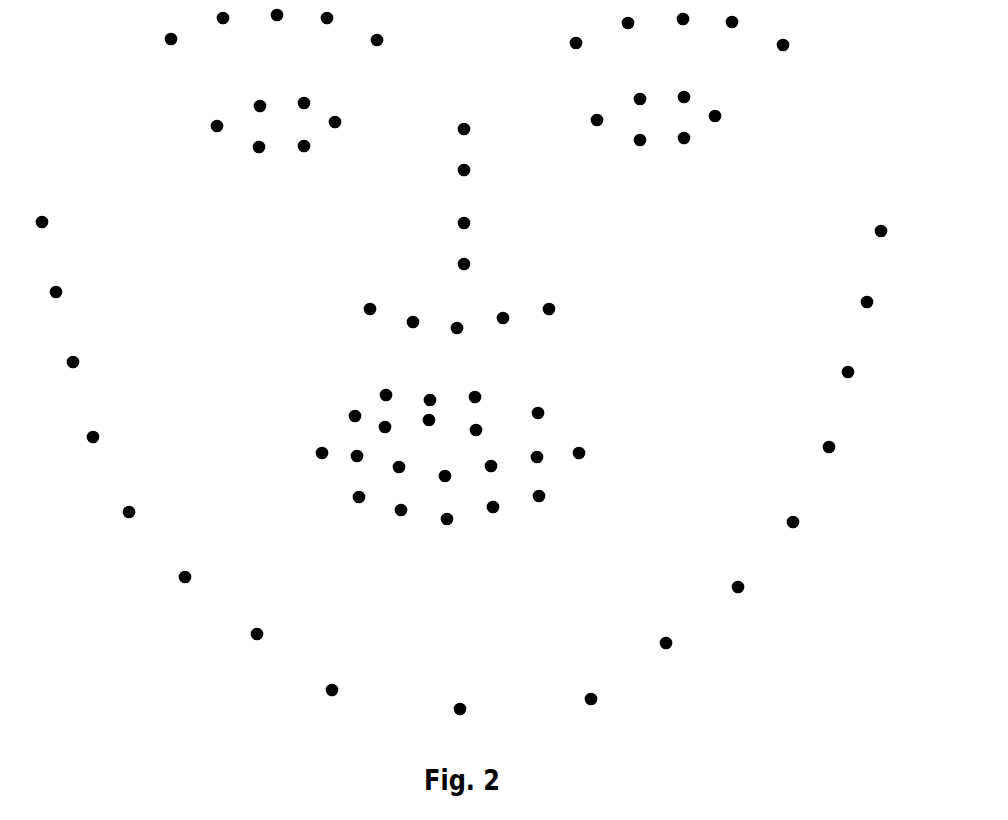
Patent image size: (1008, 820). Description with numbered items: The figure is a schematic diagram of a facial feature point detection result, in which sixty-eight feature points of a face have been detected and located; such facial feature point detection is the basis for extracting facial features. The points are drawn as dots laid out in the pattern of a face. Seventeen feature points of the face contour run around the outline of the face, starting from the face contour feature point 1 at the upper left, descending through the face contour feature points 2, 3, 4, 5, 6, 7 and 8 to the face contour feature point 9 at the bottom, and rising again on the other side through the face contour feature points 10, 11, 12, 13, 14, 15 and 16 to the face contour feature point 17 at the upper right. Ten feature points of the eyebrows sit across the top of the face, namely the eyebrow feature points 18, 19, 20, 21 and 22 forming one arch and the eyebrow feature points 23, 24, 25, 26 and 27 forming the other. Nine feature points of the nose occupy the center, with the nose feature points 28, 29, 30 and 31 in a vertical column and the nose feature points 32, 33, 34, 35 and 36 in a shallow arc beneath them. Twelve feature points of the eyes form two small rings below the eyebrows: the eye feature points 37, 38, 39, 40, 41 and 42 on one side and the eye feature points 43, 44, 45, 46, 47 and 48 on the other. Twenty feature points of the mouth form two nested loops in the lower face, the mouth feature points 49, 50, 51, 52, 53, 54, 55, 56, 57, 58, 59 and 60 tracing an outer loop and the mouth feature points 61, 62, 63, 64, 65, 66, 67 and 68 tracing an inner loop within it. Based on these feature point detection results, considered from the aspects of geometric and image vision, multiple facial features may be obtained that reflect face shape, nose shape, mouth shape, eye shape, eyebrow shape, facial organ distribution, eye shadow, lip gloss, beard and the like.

The face contour feature point 1 is at (51, 216).
The face contour feature point 2 is at (66, 287).
The face contour feature point 3 is at (83, 357).
The face contour feature point 4 is at (103, 431).
The face contour feature point 5 is at (139, 506).
The face contour feature point 6 is at (195, 572).
The face contour feature point 7 is at (267, 628).
The face contour feature point 8 is at (342, 685).
The face contour feature point 9 is at (470, 704).
The face contour feature point 10 is at (577, 694).
The face contour feature point 11 is at (652, 638).
The face contour feature point 12 is at (725, 581).
The face contour feature point 13 is at (780, 516).
The face contour feature point 14 is at (816, 441).
The face contour feature point 15 is at (835, 366).
The face contour feature point 16 is at (854, 296).
The face contour feature point 17 is at (868, 225).
The eyebrow feature point 18 is at (183, 34).
The eyebrow feature point 19 is at (237, 12).
The eyebrow feature point 20 is at (290, 10).
The eyebrow feature point 21 is at (341, 12).
The eyebrow feature point 22 is at (391, 35).
The eyebrow feature point 23 is at (588, 38).
The eyebrow feature point 24 is at (642, 16).
The eyebrow feature point 25 is at (695, 13).
The eyebrow feature point 26 is at (746, 16).
The eyebrow feature point 27 is at (797, 38).
The nose feature point 28 is at (478, 123).
The nose feature point 29 is at (478, 164).
The nose feature point 30 is at (478, 216).
The nose feature point 31 is at (478, 258).
The nose feature point 32 is at (382, 304).
The nose feature point 33 is at (427, 315).
The nose feature point 34 is at (470, 325).
The nose feature point 35 is at (516, 312).
The nose feature point 36 is at (562, 304).
The eye feature point 37 is at (229, 120).
The eye feature point 38 is at (274, 99).
The eye feature point 39 is at (317, 98).
The eye feature point 40 is at (347, 117).
The eye feature point 41 is at (317, 140).
The eye feature point 42 is at (274, 140).
The eye feature point 43 is at (609, 115).
The eye feature point 44 is at (654, 92).
The eye feature point 45 is at (697, 91).
The eye feature point 46 is at (728, 111).
The eye feature point 47 is at (697, 135).
The eye feature point 48 is at (654, 134).
The mouth feature point 49 is at (331, 447).
The mouth feature point 50 is at (363, 407).
The mouth feature point 51 is at (396, 389).
The mouth feature point 52 is at (439, 394).
The mouth feature point 53 is at (485, 391).
The mouth feature point 54 is at (548, 408).
The mouth feature point 55 is at (590, 447).
The mouth feature point 56 is at (550, 490).
The mouth feature point 57 is at (503, 501).
The mouth feature point 58 is at (458, 517).
The mouth feature point 59 is at (411, 503).
The mouth feature point 60 is at (368, 490).
The mouth feature point 61 is at (364, 450).
The mouth feature point 62 is at (395, 427).
The mouth feature point 63 is at (438, 423).
The mouth feature point 64 is at (486, 435).
The mouth feature point 65 is at (545, 451).
The mouth feature point 66 is at (501, 460).
The mouth feature point 67 is at (455, 472).
The mouth feature point 68 is at (408, 461).